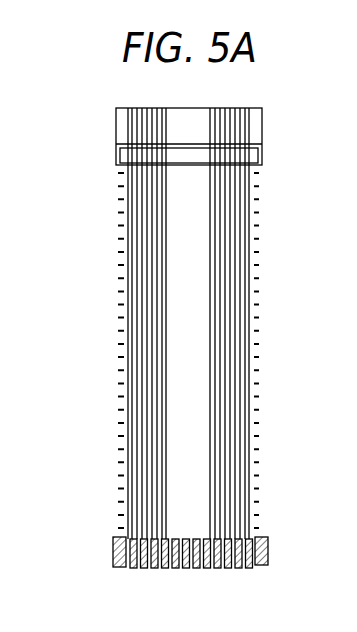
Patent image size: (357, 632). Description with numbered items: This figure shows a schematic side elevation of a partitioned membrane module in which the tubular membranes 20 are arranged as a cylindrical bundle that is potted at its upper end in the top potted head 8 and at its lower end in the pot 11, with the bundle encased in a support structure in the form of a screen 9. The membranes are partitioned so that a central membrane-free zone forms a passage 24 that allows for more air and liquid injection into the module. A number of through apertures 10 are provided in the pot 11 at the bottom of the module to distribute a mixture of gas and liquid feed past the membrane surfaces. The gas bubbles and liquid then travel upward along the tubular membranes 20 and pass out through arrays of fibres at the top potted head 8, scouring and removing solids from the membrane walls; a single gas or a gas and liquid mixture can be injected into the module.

The top potted head 8 is at (262, 130).
The screen 9 is at (257, 310).
The tubular membranes 20 is at (235, 442).
The passage 24 is at (186, 346).
The through apertures 10 is at (150, 568).
The pot 11 is at (268, 563).